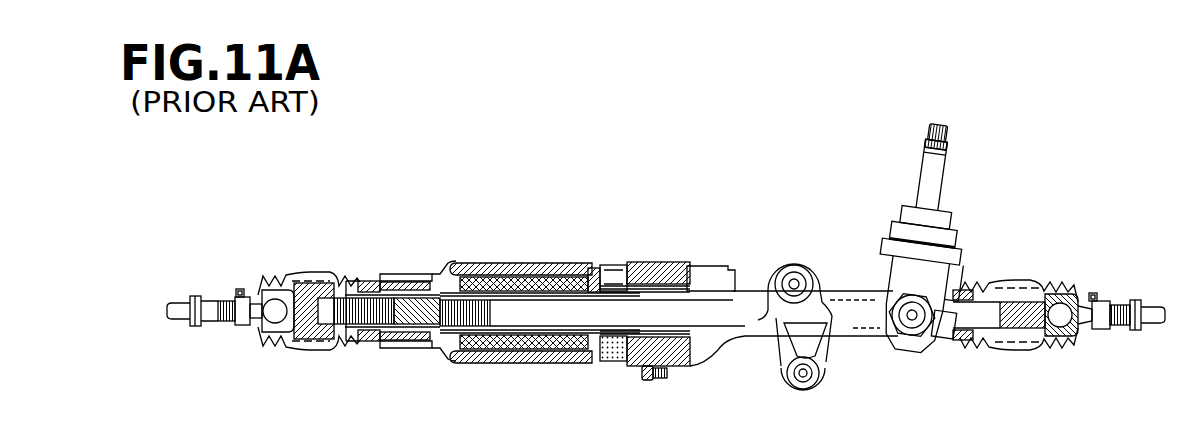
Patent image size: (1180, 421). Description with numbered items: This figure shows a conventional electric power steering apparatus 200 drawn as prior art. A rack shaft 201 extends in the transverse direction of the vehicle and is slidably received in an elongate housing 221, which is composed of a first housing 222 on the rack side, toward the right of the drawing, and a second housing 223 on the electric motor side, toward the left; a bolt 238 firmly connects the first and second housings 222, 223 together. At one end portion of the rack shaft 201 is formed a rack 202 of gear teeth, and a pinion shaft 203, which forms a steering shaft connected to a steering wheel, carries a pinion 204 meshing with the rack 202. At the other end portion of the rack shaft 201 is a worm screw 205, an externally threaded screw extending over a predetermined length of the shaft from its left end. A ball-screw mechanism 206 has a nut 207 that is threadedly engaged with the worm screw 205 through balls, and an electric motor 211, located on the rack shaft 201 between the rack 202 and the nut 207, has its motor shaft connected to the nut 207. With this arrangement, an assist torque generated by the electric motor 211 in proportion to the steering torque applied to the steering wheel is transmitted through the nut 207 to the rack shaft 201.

The electric power steering apparatus 200 is at (567, 108).
The rack shaft 201 is at (713, 310).
The rack 202 is at (888, 322).
The pinion shaft 203 is at (940, 163).
The pinion 204 is at (887, 321).
The worm screw 205 is at (343, 332).
The ball-screw mechanism 206 is at (412, 274).
The nut 207 is at (437, 268).
The electric motor 211 is at (524, 246).
The housing 221 is at (862, 160).
The first housing 222 is at (826, 275).
The second housing 223 is at (570, 261).
The bolt 238 is at (640, 371).